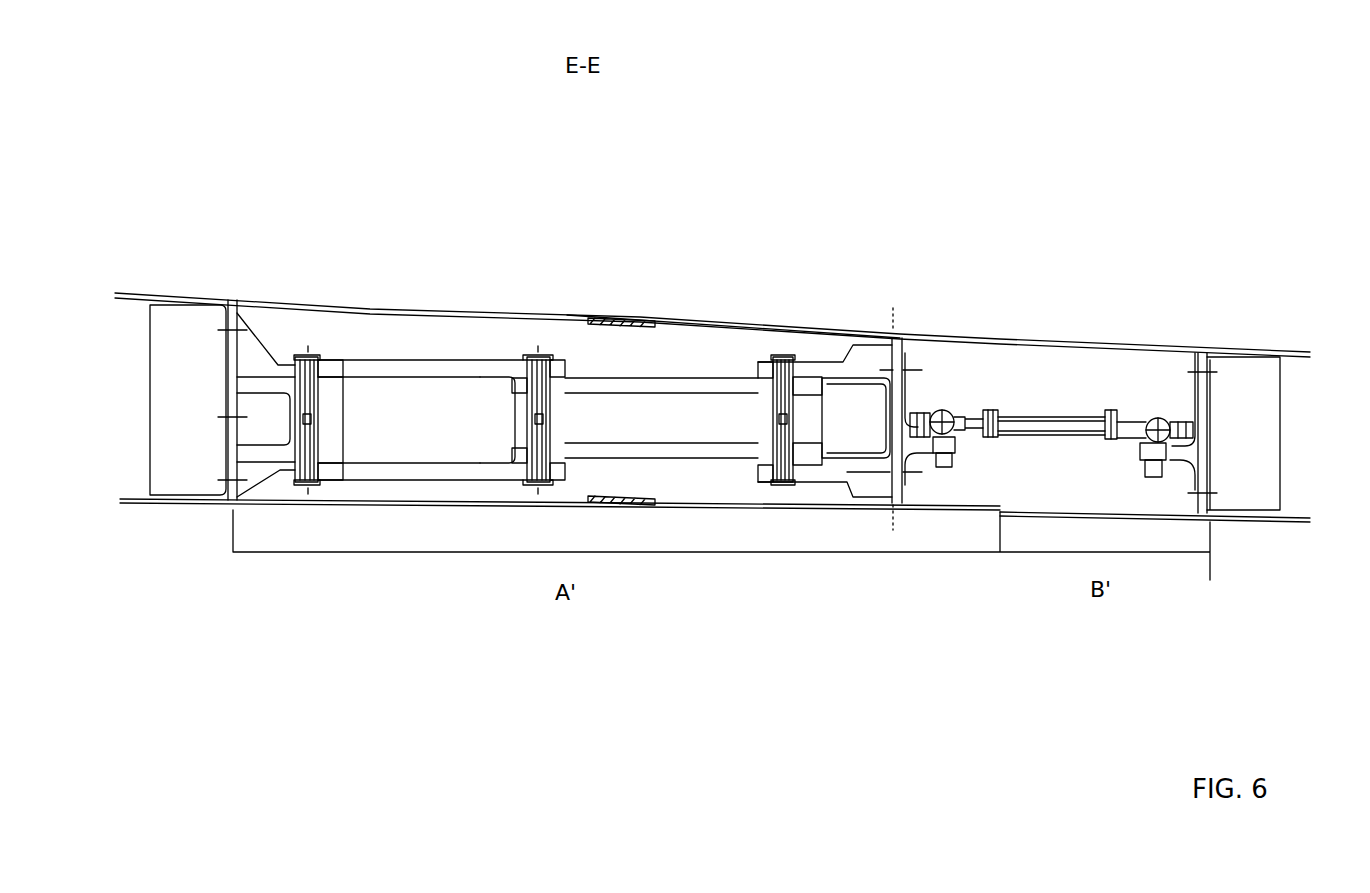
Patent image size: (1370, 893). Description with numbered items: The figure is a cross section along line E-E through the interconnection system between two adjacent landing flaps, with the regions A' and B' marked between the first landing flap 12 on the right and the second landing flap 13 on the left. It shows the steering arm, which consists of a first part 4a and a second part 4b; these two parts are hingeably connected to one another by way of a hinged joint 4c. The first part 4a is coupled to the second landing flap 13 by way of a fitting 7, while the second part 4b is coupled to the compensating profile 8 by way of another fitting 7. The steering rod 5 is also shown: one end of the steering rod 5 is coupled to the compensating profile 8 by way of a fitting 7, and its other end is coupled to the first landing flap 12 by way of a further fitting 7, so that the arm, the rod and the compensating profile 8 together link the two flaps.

The first part 4a is at (427, 334).
The second part 4b is at (669, 353).
The hinged joint 4c is at (543, 336).
The steering rod 5 is at (1058, 423).
The fitting 7 is at (293, 328).
The compensating profile 8 is at (767, 309).
The first landing flap 12 is at (1351, 439).
The second landing flap 13 is at (100, 411).